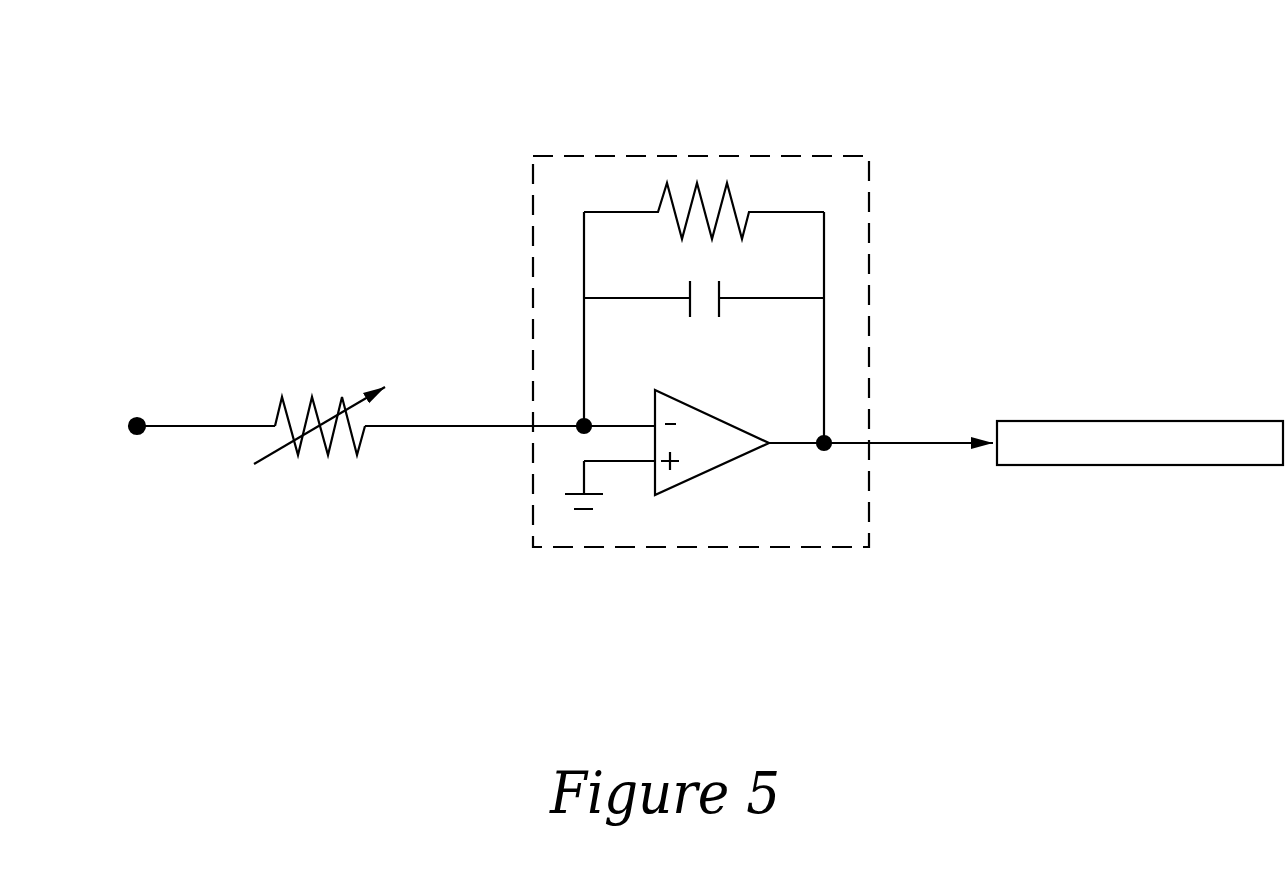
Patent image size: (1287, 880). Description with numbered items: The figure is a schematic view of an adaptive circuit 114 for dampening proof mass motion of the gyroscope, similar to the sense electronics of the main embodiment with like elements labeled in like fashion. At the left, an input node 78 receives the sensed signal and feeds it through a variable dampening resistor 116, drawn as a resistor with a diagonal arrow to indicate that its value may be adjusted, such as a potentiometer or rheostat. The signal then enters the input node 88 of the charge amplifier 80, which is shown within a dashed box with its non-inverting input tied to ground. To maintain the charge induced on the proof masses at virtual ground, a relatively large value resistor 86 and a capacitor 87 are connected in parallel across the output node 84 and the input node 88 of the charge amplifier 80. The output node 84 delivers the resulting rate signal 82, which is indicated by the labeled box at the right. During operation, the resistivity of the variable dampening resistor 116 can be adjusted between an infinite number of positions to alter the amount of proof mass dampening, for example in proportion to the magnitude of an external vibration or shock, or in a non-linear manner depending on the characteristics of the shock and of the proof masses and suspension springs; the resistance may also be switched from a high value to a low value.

The adaptive circuit 114 is at (722, 93).
The charge amplifier 80 is at (870, 243).
The resistor 86 is at (732, 197).
The capacitor 87 is at (688, 291).
The input node 88 is at (584, 426).
The output node 84 is at (824, 443).
The input signal node 78 is at (137, 418).
The variable dampening resistor 116 is at (312, 400).
The rate signal output 82 is at (1192, 420).